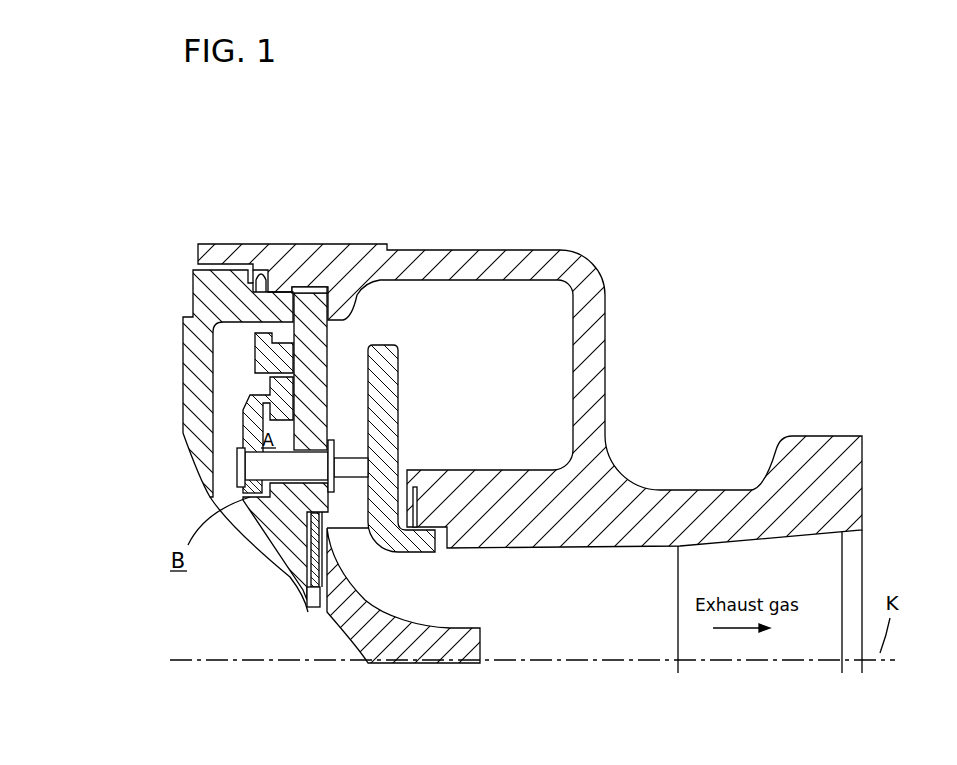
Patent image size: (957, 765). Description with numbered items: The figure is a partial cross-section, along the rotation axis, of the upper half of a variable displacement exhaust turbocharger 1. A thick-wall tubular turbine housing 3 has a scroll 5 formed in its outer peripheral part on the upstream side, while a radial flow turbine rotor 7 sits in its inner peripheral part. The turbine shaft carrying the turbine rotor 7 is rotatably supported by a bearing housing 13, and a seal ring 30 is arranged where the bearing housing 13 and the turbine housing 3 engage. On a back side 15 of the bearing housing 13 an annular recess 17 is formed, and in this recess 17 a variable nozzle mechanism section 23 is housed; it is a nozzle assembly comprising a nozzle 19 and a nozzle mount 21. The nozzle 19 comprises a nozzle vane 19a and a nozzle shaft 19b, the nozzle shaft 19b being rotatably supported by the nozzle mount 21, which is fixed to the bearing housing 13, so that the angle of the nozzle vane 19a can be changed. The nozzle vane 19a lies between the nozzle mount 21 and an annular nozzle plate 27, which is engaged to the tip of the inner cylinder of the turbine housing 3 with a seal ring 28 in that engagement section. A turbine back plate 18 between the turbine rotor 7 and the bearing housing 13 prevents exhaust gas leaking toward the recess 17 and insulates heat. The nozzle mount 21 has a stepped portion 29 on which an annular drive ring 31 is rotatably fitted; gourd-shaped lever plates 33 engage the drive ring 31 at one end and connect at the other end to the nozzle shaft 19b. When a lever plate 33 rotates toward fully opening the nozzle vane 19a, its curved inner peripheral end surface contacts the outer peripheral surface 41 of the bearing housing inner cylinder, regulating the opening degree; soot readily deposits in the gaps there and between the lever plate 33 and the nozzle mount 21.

The exhaust turbocharger 1 is at (558, 166).
The turbine housing 3 is at (545, 292).
The scroll 5 is at (580, 262).
The turbine rotor 7 is at (403, 602).
The bearing housing 13 is at (290, 580).
The back side 15 is at (193, 397).
The annular recess 17 is at (232, 320).
The turbine back plate 18 is at (313, 606).
The nozzle 19 is at (354, 437).
The nozzle vane 19a is at (353, 458).
The nozzle shaft 19b is at (262, 498).
The nozzle mount 21 is at (310, 288).
The variable nozzle mechanism section 23 is at (403, 356).
The annular nozzle plate 27 is at (380, 342).
The seal ring 28 is at (448, 532).
The stepped portion 29 is at (293, 426).
The seal ring 30 is at (266, 278).
The drive ring 31 is at (283, 413).
The lever plate 33 is at (257, 353).
The outer peripheral surface 41 is at (248, 490).